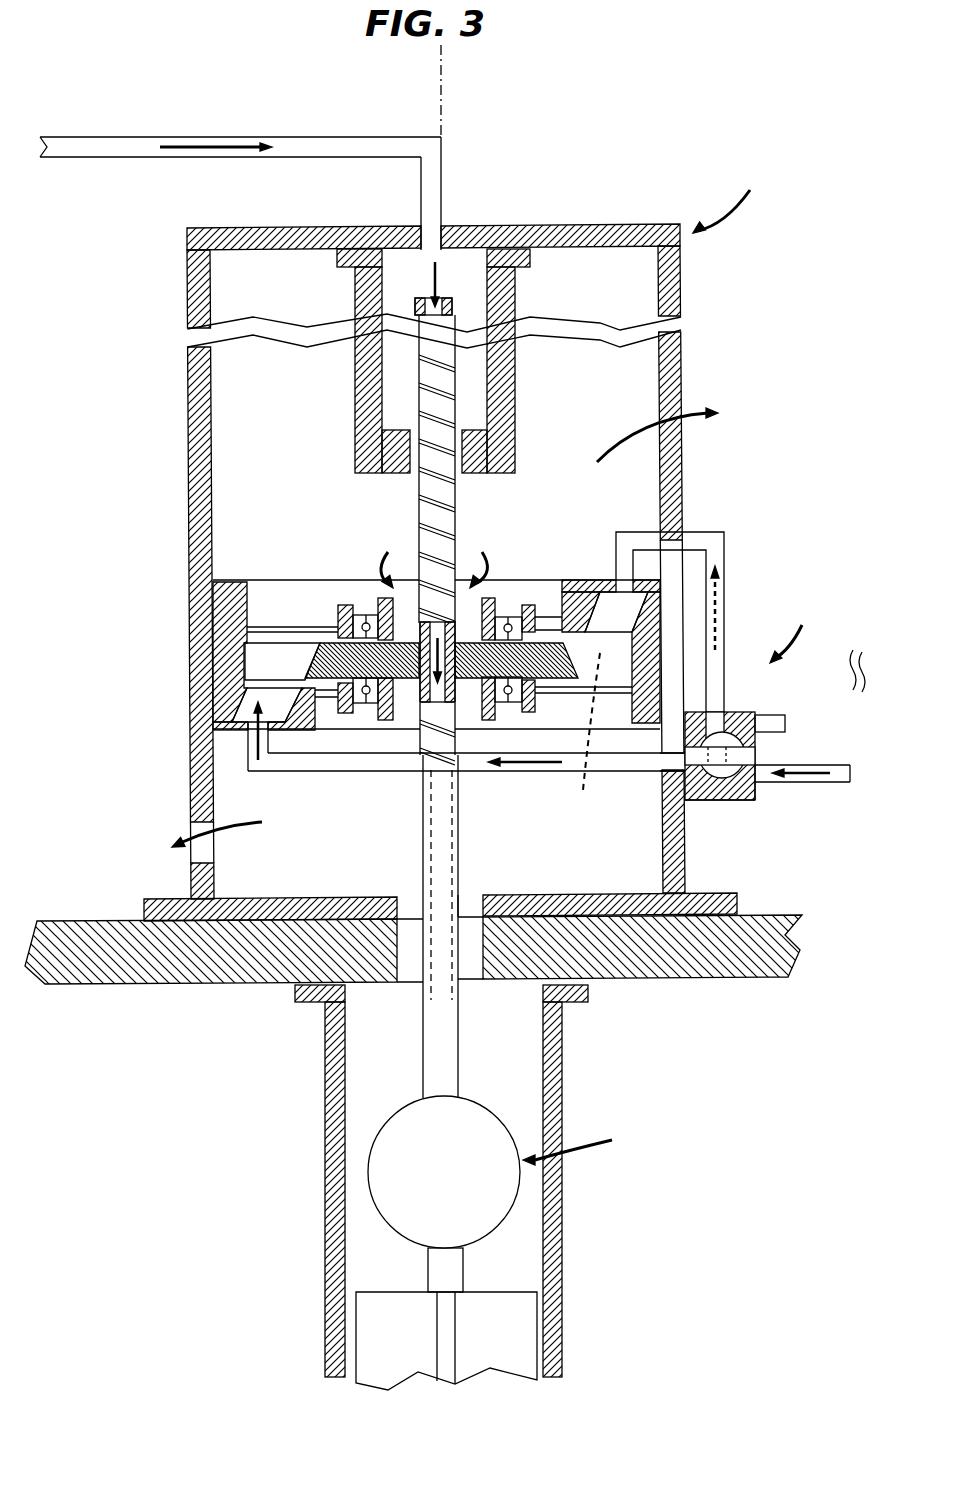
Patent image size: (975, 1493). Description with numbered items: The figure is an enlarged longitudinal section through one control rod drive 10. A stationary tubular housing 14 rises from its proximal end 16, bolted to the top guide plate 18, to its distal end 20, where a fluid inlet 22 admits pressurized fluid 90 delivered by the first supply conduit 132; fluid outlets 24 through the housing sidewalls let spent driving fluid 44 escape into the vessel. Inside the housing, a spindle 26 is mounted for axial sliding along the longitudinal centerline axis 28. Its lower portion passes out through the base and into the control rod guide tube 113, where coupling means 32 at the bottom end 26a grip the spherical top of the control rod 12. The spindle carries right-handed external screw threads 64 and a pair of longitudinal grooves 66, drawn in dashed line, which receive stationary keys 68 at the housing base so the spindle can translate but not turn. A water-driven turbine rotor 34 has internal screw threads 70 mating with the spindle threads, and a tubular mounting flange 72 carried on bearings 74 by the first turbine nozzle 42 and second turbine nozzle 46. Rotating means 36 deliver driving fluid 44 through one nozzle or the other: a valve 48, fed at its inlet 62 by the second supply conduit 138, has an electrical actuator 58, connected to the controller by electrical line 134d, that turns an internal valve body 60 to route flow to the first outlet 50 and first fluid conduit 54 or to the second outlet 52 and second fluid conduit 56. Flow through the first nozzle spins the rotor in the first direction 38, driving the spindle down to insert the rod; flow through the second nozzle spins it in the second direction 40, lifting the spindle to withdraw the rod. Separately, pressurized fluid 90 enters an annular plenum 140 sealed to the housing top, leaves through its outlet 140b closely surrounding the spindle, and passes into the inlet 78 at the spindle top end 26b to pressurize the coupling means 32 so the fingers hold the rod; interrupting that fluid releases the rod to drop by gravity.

The control rod drive 10 is at (734, 197).
The control rod 12 is at (520, 1312).
The tubular housing 14 is at (188, 433).
The proximal end 16 is at (710, 893).
The top guide plate 18 is at (790, 925).
The distal end 20 is at (590, 225).
The fluid inlet 22 is at (440, 224).
The fluid outlets 24 is at (683, 396).
The spindle 26 is at (423, 825).
The bottom end 26a is at (425, 1088).
The top end 26b is at (415, 303).
The longitudinal centerline axis 28 is at (441, 90).
The coupling means 32 is at (492, 1172).
The turbine rotor 34 is at (252, 661).
The rotating means 36 is at (790, 625).
The first direction 38 is at (378, 585).
The second direction 40 is at (497, 582).
The first turbine nozzle 42 is at (250, 714).
The driving fluid 44 is at (600, 458).
The second turbine nozzle 46 is at (600, 578).
The valve 48 is at (758, 758).
The first outlet 50 is at (667, 762).
The second outlet 52 is at (718, 712).
The first fluid conduit 54 is at (505, 772).
The second fluid conduit 56 is at (724, 548).
The electrical actuator 58 is at (770, 717).
The internal valve body 60 is at (722, 800).
The inlet 62 is at (752, 790).
The external screw threads 64 is at (457, 500).
The grooves 66 is at (423, 890).
The stationary keys 68 is at (483, 905).
The internal screw threads 70 is at (420, 668).
The tubular mounting flange 72 is at (505, 598).
The bearings 74 is at (360, 605).
The inlet 78 is at (455, 303).
The pressurized fluid 90 is at (228, 137).
The control rod guide tube 113 is at (562, 1105).
The first supply conduit 132 is at (104, 137).
The electrical line 134d is at (785, 724).
The second supply conduit 138 is at (832, 783).
The annular plenum 140 is at (355, 372).
The outlet 140b is at (382, 450).